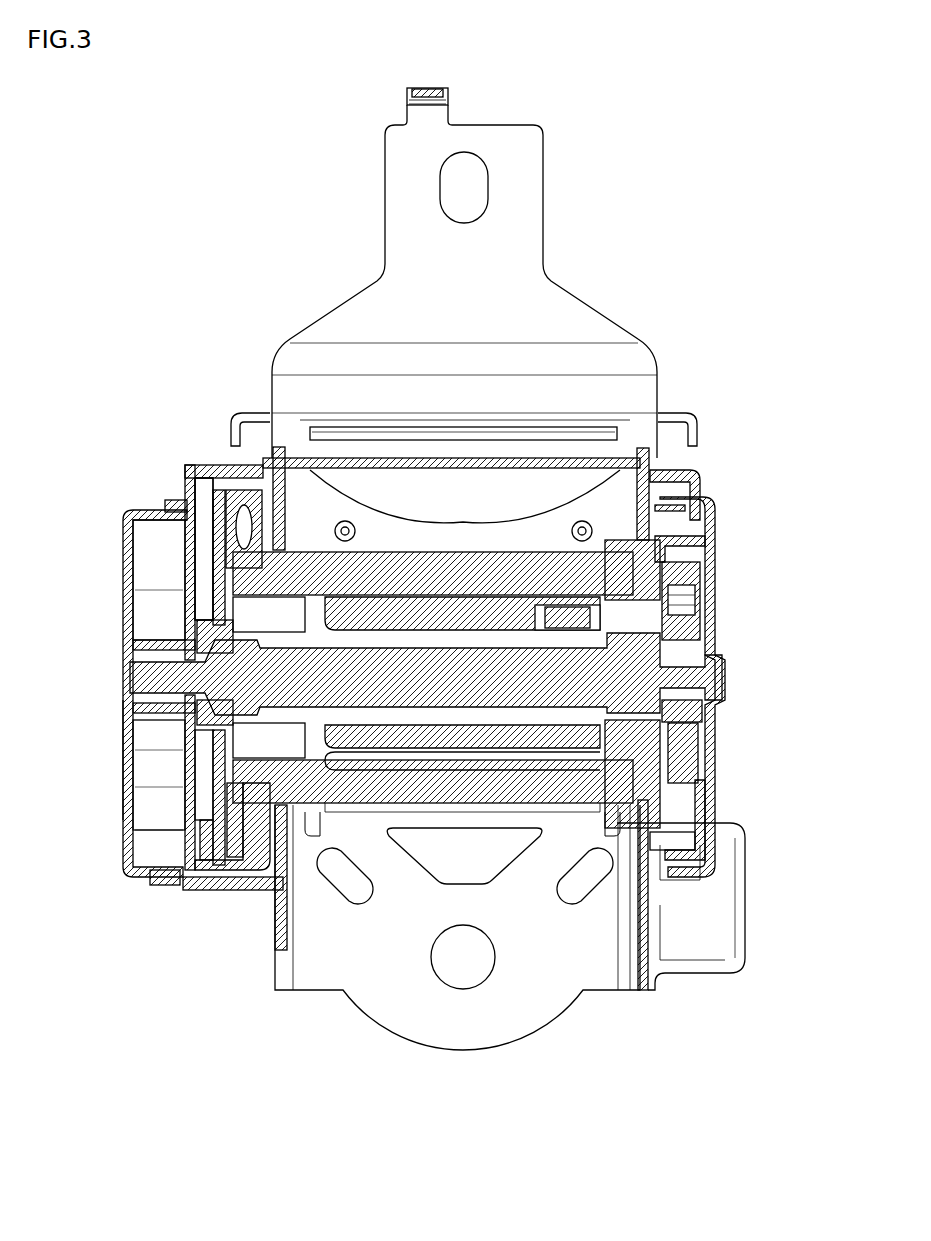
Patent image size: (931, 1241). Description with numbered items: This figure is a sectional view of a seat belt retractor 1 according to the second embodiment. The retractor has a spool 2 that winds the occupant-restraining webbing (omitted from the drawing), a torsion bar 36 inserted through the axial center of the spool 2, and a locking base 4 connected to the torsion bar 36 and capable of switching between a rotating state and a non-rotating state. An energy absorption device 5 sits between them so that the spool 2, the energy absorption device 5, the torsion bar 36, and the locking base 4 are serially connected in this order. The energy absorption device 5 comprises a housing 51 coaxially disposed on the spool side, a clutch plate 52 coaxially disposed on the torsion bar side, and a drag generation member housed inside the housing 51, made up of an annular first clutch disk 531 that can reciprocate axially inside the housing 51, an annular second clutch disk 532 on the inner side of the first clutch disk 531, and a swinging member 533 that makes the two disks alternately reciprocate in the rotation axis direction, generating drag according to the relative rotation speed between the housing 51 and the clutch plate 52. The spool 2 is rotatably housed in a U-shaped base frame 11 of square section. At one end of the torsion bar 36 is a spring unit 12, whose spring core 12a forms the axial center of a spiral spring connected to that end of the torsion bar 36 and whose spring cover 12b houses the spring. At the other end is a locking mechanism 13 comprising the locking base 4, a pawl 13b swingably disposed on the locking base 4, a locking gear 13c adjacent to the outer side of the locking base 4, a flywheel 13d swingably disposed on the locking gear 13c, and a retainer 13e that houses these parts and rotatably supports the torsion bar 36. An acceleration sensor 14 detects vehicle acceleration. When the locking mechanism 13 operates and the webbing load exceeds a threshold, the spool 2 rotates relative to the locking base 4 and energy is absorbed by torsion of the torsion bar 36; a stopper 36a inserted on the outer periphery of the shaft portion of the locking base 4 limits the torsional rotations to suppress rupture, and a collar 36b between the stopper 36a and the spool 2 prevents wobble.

The seat belt retractor 1 is at (689, 320).
The spool 2 is at (462, 550).
The locking base 4 is at (698, 600).
The energy absorption device 5 is at (212, 482).
The base frame 11 is at (288, 919).
The spring unit 12 is at (103, 595).
The spring core 12a is at (165, 640).
The spring cover 12b is at (122, 760).
The locking mechanism 13 is at (723, 480).
The pawl 13b is at (695, 555).
The locking gear 13c is at (710, 520).
The flywheel 13d is at (708, 740).
The retainer 13e is at (712, 783).
The acceleration sensor 14 is at (745, 895).
The torsion bar 36 is at (476, 687).
The stopper 36a is at (573, 760).
The collar 36b is at (532, 605).
The housing 51 is at (273, 496).
The clutch plate 52 is at (217, 571).
The first clutch disk 531 is at (180, 507).
The second clutch disk 532 is at (215, 545).
The swinging member 533 is at (273, 515).